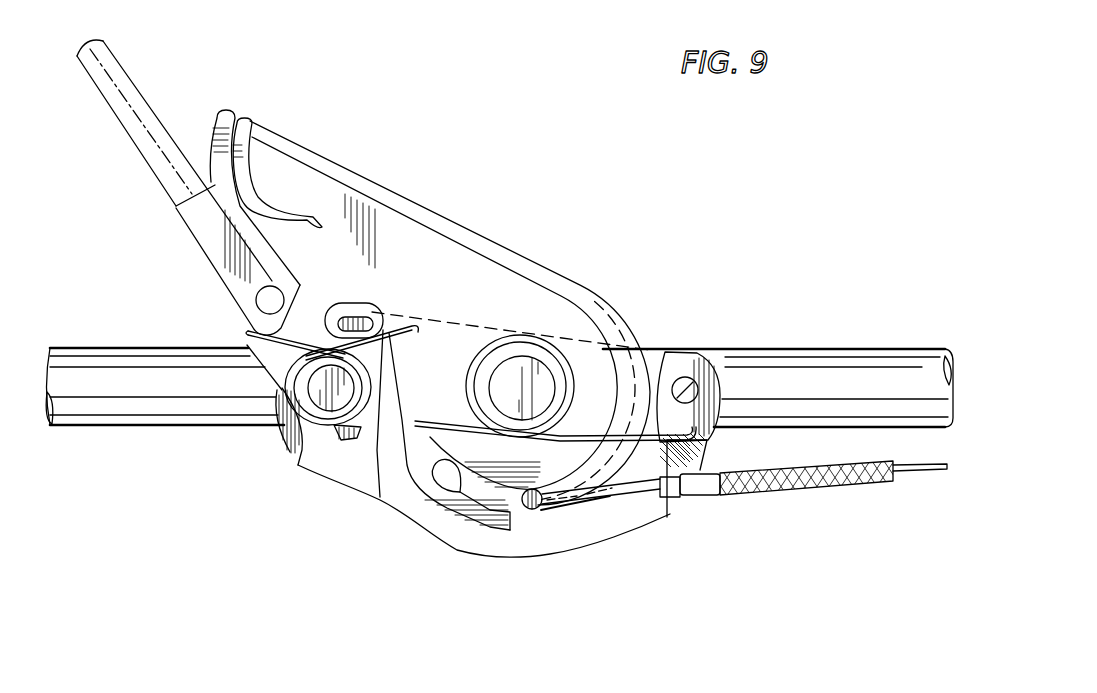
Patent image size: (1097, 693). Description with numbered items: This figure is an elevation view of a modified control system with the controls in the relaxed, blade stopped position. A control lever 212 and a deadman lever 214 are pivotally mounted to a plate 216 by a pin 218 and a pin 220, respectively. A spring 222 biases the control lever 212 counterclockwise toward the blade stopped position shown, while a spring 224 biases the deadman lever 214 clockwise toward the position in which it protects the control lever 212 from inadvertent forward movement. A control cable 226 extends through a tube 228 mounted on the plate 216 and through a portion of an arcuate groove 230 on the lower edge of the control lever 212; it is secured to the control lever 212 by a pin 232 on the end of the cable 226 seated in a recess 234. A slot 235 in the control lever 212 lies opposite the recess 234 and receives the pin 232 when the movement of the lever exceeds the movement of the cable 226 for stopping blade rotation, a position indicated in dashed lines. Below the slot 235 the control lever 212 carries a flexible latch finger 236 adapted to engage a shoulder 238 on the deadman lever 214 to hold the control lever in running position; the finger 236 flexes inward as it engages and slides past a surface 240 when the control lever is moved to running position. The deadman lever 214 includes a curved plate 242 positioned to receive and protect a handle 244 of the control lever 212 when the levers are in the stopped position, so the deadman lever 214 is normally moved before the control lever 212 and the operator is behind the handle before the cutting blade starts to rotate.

The control lever 212 is at (450, 240).
The deadman lever 214 is at (140, 145).
The plate 216 is at (300, 457).
The pin 218 is at (537, 360).
The pin 220 is at (313, 405).
The spring 222 is at (670, 350).
The spring 224 is at (240, 343).
The control cable 226 is at (623, 497).
The tube 228 is at (707, 500).
The arcuate groove 230 is at (597, 473).
The pin 232 is at (527, 509).
The recess 234 is at (538, 509).
The slot 235 is at (457, 490).
The flexible latch finger 236 is at (507, 517).
The shoulder 238 is at (380, 497).
The surface 240 is at (353, 440).
The curved plate 242 is at (227, 110).
The handle 244 is at (263, 193).